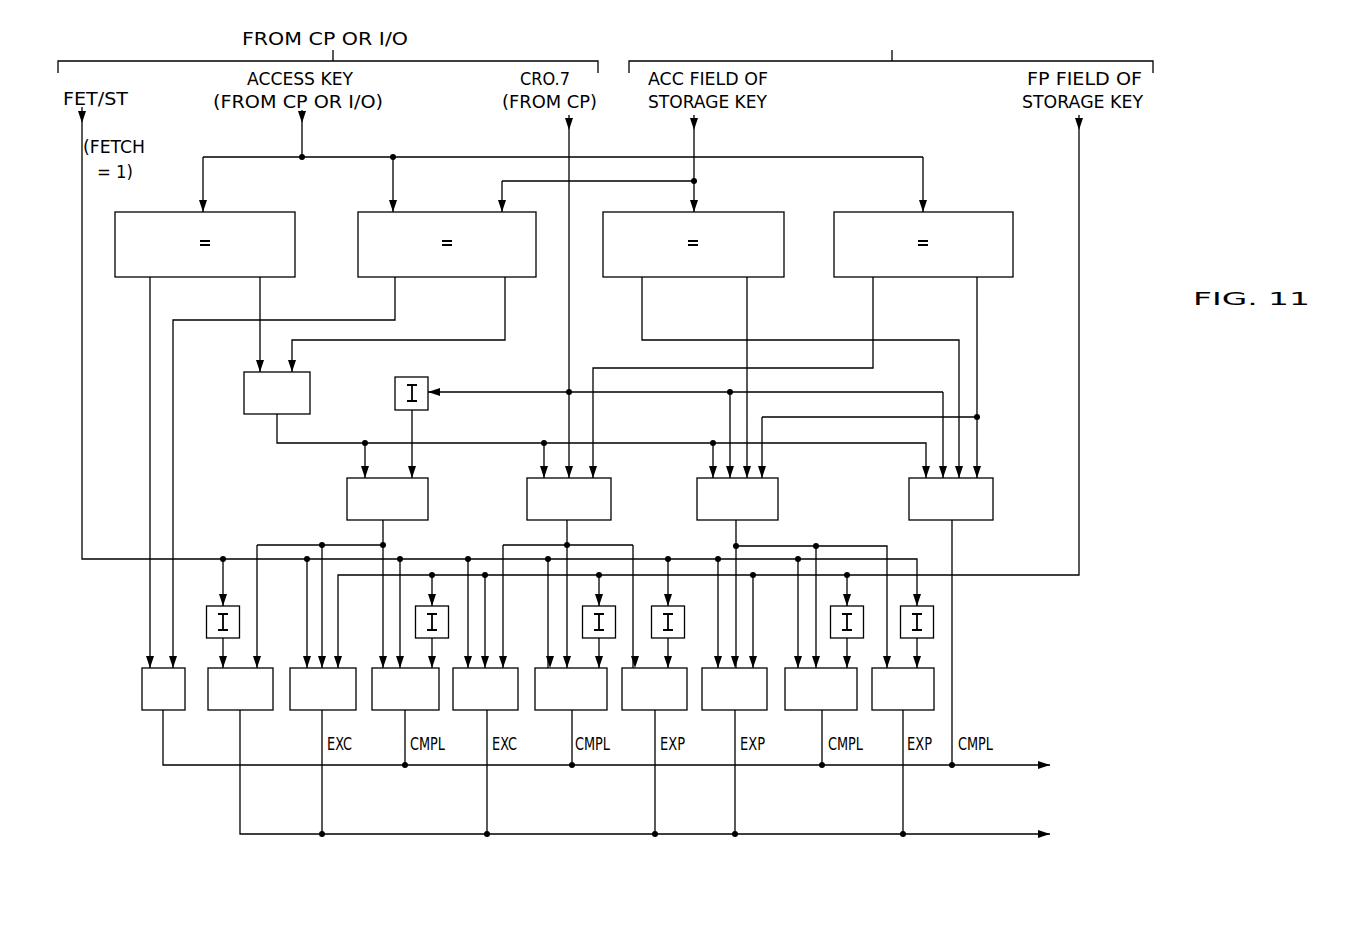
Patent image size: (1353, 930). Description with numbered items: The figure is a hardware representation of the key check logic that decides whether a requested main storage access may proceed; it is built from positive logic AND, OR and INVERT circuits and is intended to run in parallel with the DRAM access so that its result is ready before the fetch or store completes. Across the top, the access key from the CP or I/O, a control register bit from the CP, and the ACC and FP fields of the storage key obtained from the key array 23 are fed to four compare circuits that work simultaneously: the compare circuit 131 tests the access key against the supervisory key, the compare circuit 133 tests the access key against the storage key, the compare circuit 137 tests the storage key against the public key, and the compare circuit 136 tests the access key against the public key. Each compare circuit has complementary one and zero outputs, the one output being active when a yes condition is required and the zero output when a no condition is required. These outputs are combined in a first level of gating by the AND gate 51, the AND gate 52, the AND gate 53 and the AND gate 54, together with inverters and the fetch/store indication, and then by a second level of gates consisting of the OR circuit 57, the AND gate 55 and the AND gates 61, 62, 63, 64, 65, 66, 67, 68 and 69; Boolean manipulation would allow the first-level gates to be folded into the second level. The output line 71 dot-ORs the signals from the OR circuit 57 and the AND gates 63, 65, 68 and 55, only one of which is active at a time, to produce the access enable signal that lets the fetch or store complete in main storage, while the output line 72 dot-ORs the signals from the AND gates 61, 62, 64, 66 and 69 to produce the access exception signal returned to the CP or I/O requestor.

The key array 23 is at (891, 50).
The compare circuit 131 is at (208, 241).
The compare circuit 133 is at (376, 212).
The compare circuit 137 is at (706, 241).
The compare circuit 136 is at (934, 241).
The AND gate 51 is at (244, 392).
The AND gate 52 is at (413, 499).
The AND gate 53 is at (594, 499).
The AND gate 54 is at (763, 499).
The AND gate 55 is at (976, 499).
The OR circuit 57 is at (142, 688).
The AND gate 61 is at (233, 709).
The AND gate 62 is at (319, 709).
The AND gate 63 is at (405, 709).
The AND gate 64 is at (485, 709).
The AND gate 65 is at (571, 709).
The AND gate 66 is at (654, 709).
The AND gate 67 is at (734, 709).
The AND gate 68 is at (821, 709).
The AND gate 69 is at (903, 709).
The output line 71 is at (786, 767).
The output line 72 is at (800, 831).